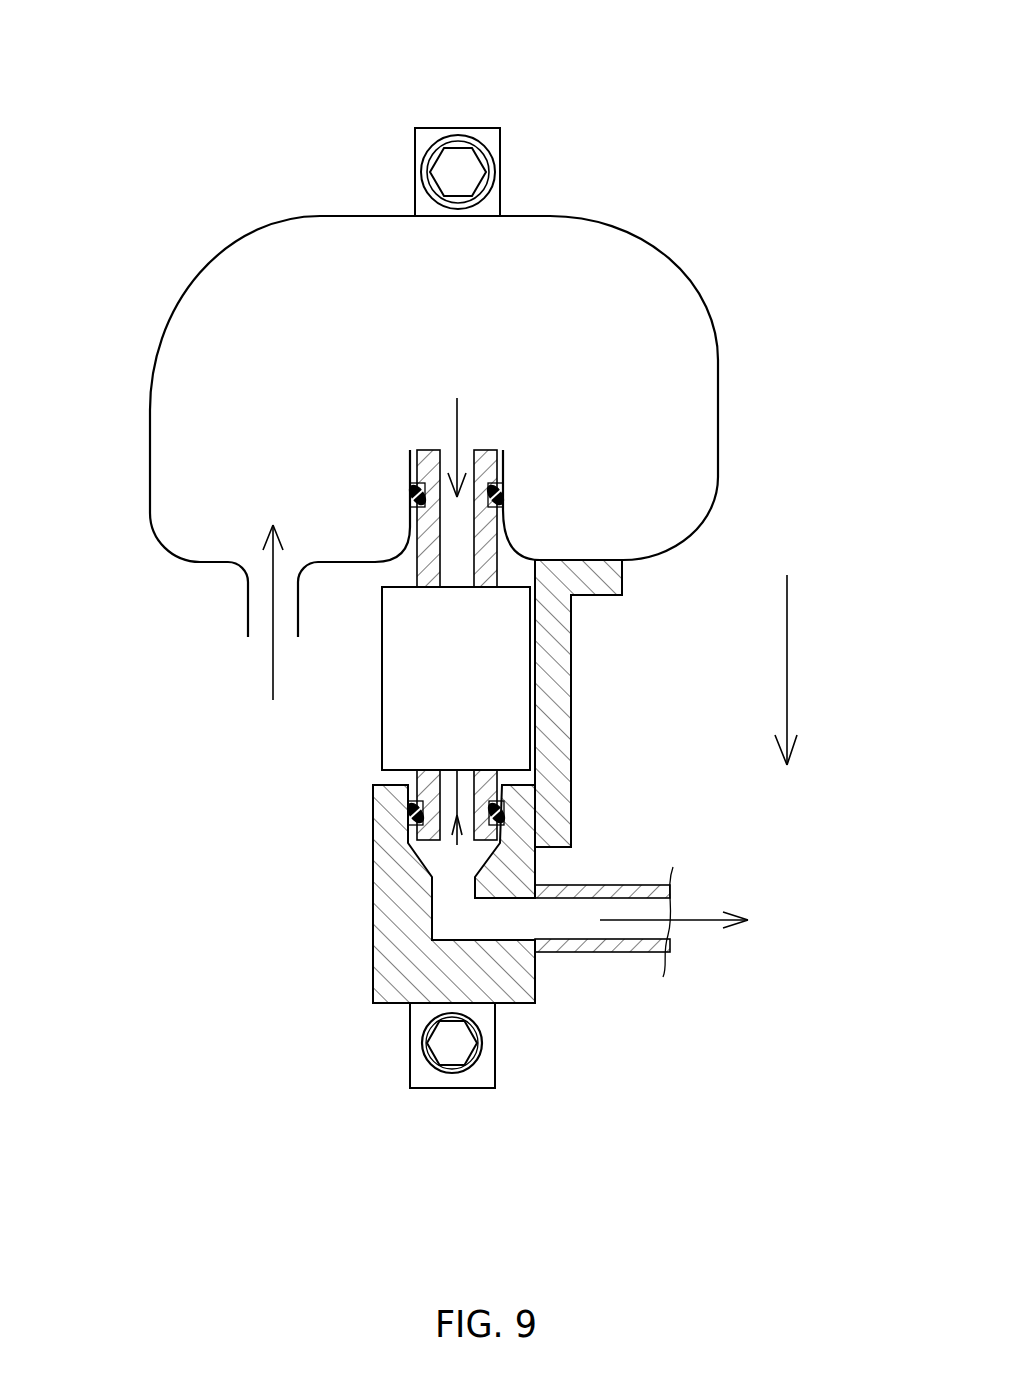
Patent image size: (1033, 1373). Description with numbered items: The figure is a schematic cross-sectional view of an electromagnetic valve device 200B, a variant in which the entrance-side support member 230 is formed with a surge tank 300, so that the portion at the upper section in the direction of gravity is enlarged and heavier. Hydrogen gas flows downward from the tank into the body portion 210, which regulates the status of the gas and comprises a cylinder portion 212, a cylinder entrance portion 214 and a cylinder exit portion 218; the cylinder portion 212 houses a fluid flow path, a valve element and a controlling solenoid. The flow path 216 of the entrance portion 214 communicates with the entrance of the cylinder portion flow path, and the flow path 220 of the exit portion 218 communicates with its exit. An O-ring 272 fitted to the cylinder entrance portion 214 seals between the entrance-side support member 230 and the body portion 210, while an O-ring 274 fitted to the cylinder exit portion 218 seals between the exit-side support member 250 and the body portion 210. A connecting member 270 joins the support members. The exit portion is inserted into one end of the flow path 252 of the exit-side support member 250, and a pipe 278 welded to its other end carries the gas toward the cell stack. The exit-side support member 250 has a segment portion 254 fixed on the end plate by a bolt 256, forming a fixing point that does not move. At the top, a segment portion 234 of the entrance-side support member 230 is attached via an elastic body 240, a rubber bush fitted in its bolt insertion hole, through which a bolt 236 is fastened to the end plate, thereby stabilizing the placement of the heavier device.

The electromagnetic valve device 200B is at (332, 1090).
The body portion 210 is at (363, 735).
The cylinder portion 212 is at (503, 723).
The cylinder entrance portion 214 is at (483, 452).
The flow path 216 is at (457, 545).
The cylinder exit portion 218 is at (538, 867).
The flow path 220 is at (432, 877).
The entrance-side support member 230 is at (237, 238).
The segment portion 234 is at (425, 135).
The bolt 236 is at (473, 168).
The elastic body 240 is at (427, 162).
The exit-side support member 250 is at (388, 988).
The flow path 252 is at (467, 918).
The segment portion 254 is at (423, 1082).
The bolt 256 is at (460, 1052).
The connecting member 270 is at (560, 660).
The O-ring 272 is at (500, 495).
The O-ring 274 is at (408, 815).
The pipe 278 is at (610, 947).
The surge tank 300 is at (429, 389).